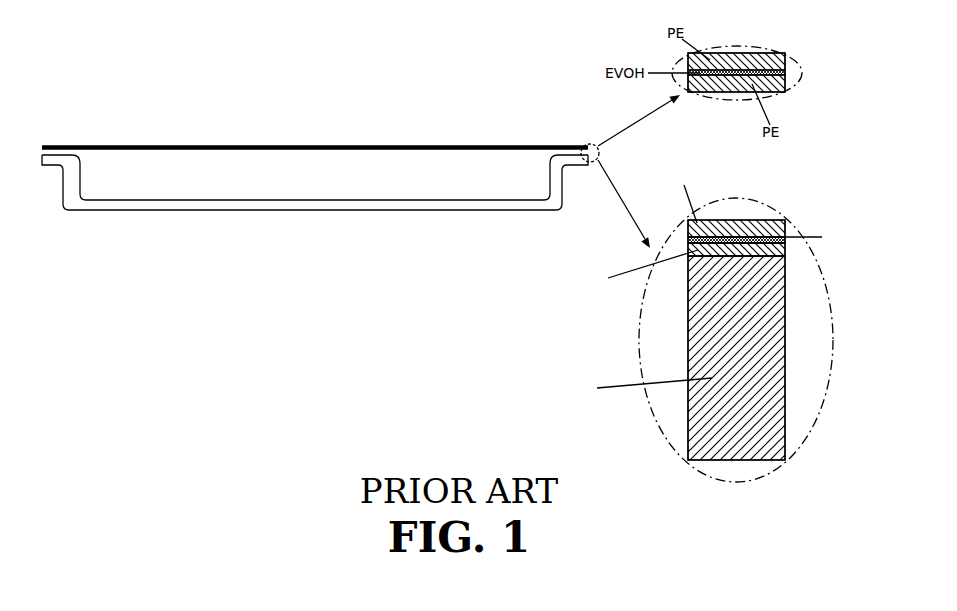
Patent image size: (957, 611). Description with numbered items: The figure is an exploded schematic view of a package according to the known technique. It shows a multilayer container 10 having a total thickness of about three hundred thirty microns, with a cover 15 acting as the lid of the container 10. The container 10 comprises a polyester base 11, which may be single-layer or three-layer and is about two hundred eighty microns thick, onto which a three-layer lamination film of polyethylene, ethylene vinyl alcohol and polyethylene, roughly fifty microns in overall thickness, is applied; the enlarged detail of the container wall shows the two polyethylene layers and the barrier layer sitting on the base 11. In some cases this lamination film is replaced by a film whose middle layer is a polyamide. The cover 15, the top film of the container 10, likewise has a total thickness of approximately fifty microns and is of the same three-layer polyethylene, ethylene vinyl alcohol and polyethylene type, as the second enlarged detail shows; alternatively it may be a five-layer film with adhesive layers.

The multilayer container 10 is at (200, 226).
The PET base 11 is at (693, 415).
The cover 15 is at (246, 134).